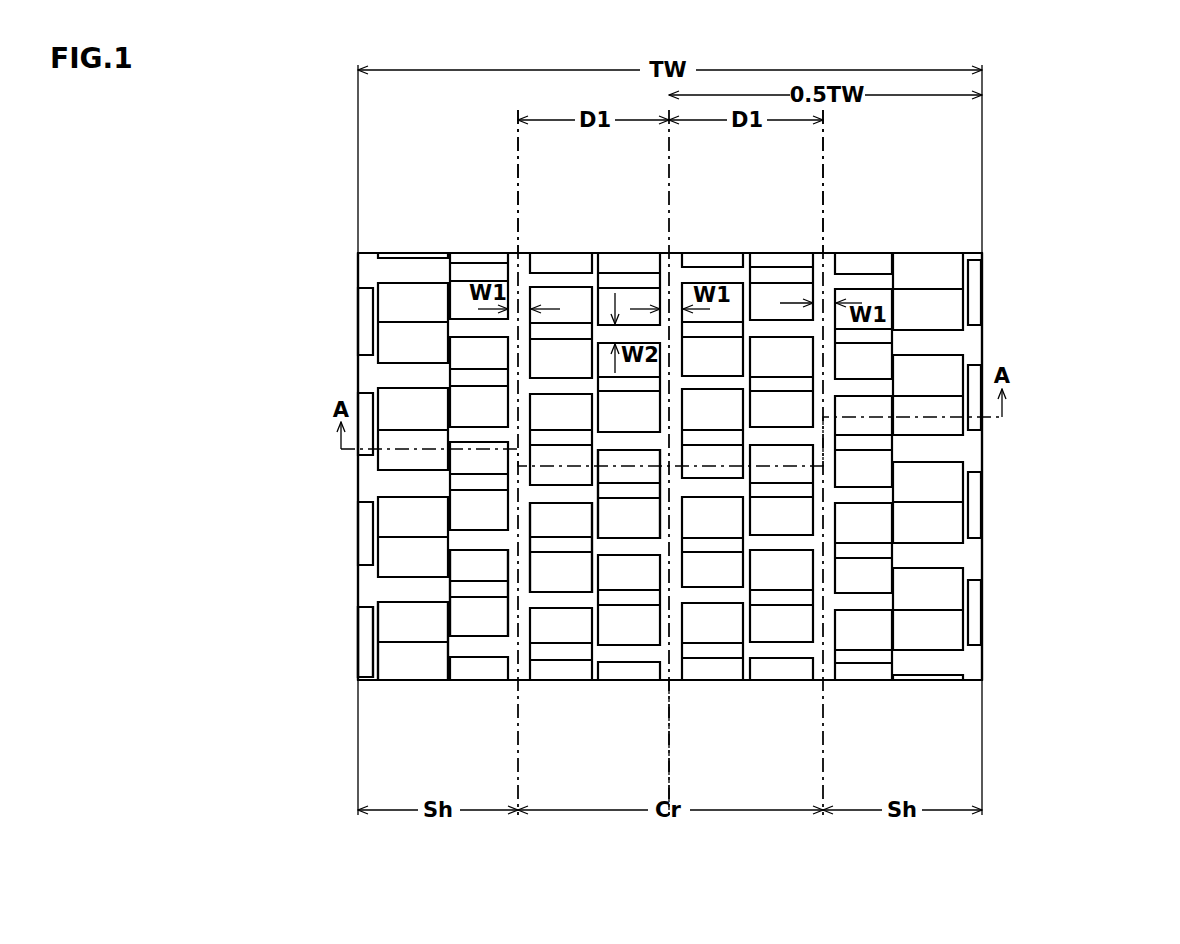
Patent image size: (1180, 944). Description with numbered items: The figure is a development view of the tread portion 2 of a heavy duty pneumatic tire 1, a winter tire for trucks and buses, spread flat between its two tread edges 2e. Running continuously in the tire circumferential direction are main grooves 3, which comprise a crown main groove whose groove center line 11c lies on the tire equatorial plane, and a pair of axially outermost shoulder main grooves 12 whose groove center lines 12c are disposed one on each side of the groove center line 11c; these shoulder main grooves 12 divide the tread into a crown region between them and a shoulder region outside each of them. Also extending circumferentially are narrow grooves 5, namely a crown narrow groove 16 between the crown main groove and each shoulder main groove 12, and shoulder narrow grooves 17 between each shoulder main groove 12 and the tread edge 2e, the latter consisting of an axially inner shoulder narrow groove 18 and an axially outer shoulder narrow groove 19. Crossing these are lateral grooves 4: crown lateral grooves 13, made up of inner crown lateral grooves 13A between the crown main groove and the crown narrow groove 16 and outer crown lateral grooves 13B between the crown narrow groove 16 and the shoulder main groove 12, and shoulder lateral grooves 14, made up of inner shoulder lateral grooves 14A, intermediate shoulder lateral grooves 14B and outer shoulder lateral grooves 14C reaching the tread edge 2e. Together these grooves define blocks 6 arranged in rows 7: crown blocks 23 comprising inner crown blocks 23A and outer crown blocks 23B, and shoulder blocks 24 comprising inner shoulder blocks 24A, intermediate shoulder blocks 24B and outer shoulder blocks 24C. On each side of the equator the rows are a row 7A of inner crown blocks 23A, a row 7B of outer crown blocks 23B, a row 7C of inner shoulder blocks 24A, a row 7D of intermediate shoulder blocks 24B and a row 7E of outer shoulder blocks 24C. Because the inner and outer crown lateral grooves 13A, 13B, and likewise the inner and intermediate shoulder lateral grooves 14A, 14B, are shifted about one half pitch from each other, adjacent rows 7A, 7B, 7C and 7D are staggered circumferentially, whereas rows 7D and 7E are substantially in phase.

The heavy duty pneumatic tire 1 is at (1045, 157).
The tread portion 2 is at (481, 245).
The tread edges 2e is at (357, 325).
The main grooves 3 is at (522, 273).
The lateral grooves 4 is at (931, 508).
The narrow groove 5 is at (378, 293).
The blocks 6 is at (416, 565).
The rows of blocks 7 is at (509, 521).
The row of inner crown blocks 7A is at (629, 502).
The row of outer crown blocks 7B is at (555, 667).
The row of inner shoulder blocks 7C is at (487, 667).
The row of intermediate shoulder blocks 7D is at (432, 668).
The row of outer shoulder blocks 7E is at (368, 667).
The groove center line of crown main groove 11c is at (673, 688).
The shoulder main grooves 12 is at (670, 462).
The groove center lines of shoulder main grooves 12c is at (517, 151).
The crown lateral grooves 13 is at (748, 508).
The axially inner crown lateral grooves 13A is at (710, 595).
The axially outer crown lateral grooves 13B is at (781, 488).
The shoulder lateral grooves 14 is at (1007, 466).
The axially inner shoulder lateral grooves 14A is at (870, 493).
The intermediate shoulder lateral grooves 14B is at (920, 452).
The axially outer shoulder lateral grooves 14C is at (974, 465).
The crown narrow groove 16 is at (740, 283).
The shoulder narrow grooves 17 is at (913, 268).
The axially inner shoulder narrow groove 18 is at (890, 283).
The axially outer shoulder narrow groove 19 is at (961, 281).
The crown blocks 23 is at (416, 521).
The axially inner crown blocks 23A is at (630, 520).
The axially outer crown blocks 23B is at (560, 572).
The shoulder blocks 24 is at (340, 615).
The inner shoulder blocks 24A is at (482, 622).
The intermediate shoulder blocks 24B is at (413, 615).
The outer shoulder blocks 24C is at (368, 662).